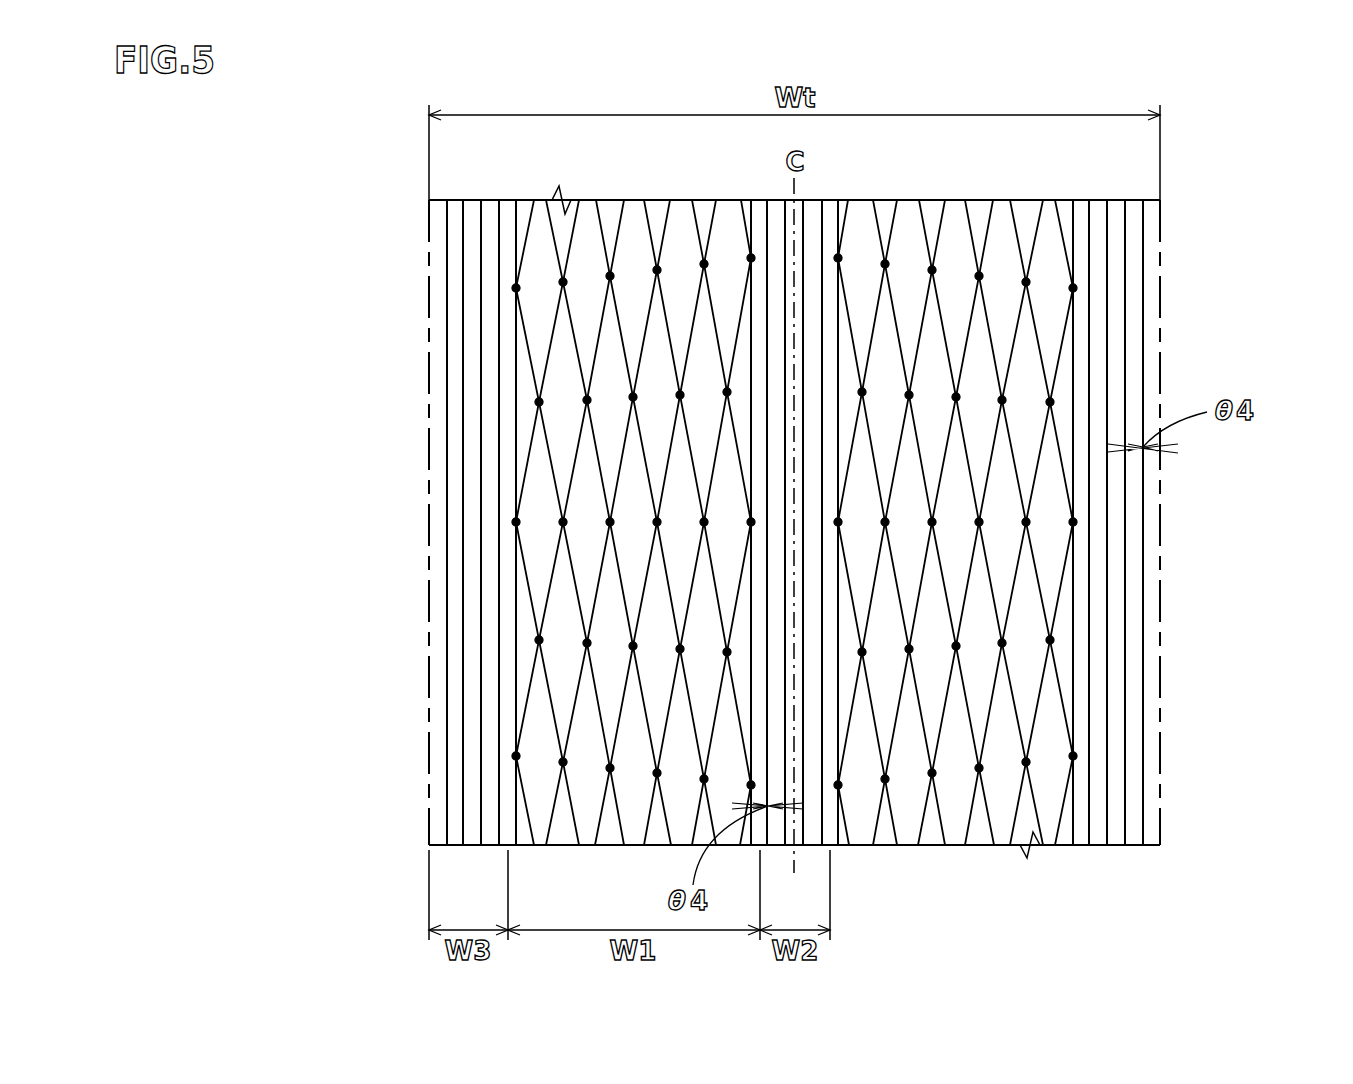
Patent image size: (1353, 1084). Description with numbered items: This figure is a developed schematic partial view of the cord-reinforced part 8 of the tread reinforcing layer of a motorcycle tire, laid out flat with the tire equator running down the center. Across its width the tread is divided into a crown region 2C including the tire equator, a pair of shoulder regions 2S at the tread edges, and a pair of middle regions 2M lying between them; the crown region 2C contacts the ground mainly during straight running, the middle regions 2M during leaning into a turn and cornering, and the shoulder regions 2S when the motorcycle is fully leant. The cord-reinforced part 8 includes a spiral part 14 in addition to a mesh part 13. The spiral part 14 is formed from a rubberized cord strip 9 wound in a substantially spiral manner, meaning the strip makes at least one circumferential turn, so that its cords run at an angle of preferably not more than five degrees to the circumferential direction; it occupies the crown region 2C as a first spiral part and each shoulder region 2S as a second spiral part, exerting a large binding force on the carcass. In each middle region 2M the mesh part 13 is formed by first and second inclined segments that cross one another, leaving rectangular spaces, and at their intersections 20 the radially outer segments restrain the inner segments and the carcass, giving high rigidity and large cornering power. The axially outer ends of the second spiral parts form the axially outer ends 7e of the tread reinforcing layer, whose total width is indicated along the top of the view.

The cord-reinforced part 8 is at (1197, 167).
The rubberized cord strip 9 is at (445, 520).
The intersections 20 is at (1050, 640).
The mesh part 13 is at (620, 853).
The spiral part 14 is at (774, 525).
The axially outer end of the tread reinforcing layer 7e is at (429, 806).
The shoulder region 2S is at (476, 191).
The middle region 2M is at (886, 542).
The crown region 2C is at (776, 191).